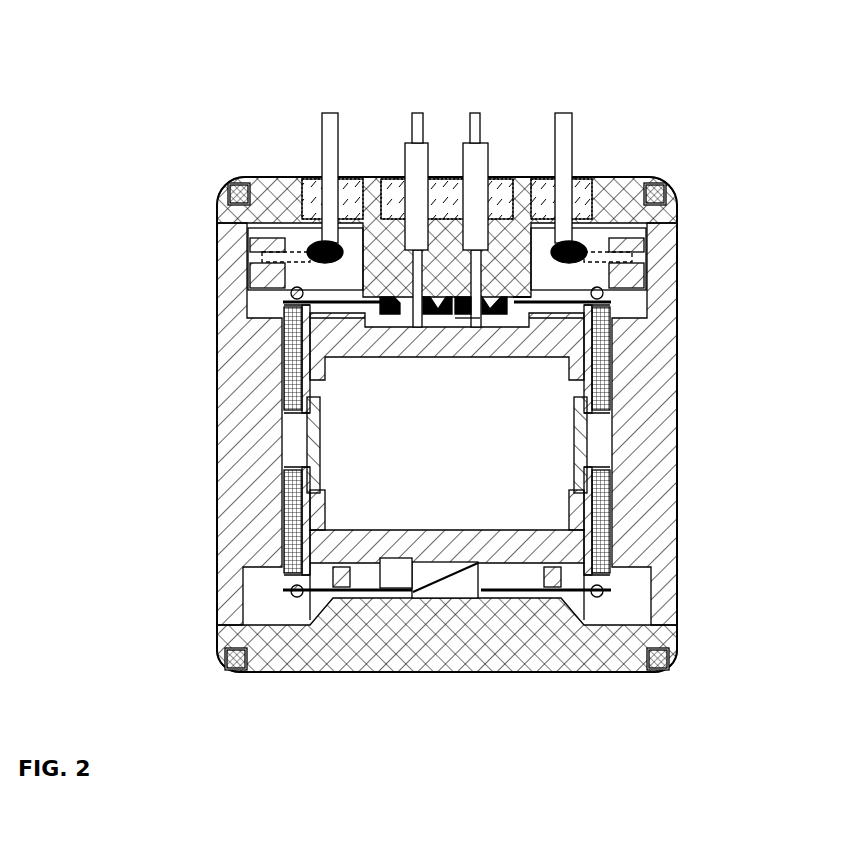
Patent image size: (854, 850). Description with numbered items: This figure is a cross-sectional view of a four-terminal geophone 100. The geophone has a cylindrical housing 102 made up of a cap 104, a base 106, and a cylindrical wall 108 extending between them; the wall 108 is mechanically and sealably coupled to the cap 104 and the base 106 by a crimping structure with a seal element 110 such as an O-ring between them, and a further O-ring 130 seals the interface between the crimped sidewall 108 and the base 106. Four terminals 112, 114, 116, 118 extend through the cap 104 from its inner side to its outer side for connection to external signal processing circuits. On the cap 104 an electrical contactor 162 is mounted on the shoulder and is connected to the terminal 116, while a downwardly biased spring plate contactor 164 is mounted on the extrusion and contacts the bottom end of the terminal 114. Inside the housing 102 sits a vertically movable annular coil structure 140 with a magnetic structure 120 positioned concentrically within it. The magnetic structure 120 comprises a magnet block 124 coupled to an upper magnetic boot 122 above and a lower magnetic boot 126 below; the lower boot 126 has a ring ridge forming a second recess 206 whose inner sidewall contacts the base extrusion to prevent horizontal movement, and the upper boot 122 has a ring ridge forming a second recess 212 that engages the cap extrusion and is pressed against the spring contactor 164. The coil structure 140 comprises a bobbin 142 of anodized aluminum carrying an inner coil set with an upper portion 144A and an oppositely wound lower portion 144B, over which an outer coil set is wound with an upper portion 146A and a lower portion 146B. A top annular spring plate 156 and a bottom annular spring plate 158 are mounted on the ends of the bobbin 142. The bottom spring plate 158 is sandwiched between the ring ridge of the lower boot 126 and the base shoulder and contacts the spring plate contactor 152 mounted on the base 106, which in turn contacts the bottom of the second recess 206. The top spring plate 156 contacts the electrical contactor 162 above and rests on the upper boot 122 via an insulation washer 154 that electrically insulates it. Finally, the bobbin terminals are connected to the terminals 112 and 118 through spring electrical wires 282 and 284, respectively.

The four-terminal geophone 100 is at (118, 137).
The cylindrical housing 102 is at (158, 264).
The cap 104 is at (267, 198).
The base 106 is at (622, 652).
The cylindrical wall 108 is at (657, 253).
The seal element 110 is at (237, 191).
The terminal 112 is at (322, 112).
The terminal 114 is at (412, 112).
The terminal 116 is at (477, 112).
The terminal 118 is at (565, 112).
The magnetic structure 120 is at (447, 649).
The upper magnetic boot 122 is at (373, 335).
The magnet block 124 is at (372, 568).
The lower magnetic boot 126 is at (361, 502).
The O-ring 130 is at (232, 665).
The movable coil structure 140 is at (110, 287).
The bobbin 142 is at (312, 437).
The upper portion of inner coil set 144A is at (284, 330).
The lower portion of inner coil set 144B is at (284, 519).
The upper portion of outer coil set 146A is at (290, 363).
The lower portion of outer coil set 146B is at (290, 556).
The spring plate electrical contactor 152 is at (470, 585).
The insulation washer 154 is at (360, 320).
The top annular metal spring plate 156 is at (291, 296).
The bottom annular metal spring plate 158 is at (291, 589).
The electrical contactor 162 is at (520, 293).
The spring plate electrical contactor 164 is at (470, 318).
The second recess 206 is at (453, 585).
The second recess 212 is at (450, 312).
The spring electrical wire 282 is at (317, 247).
The spring electrical wire 284 is at (577, 247).